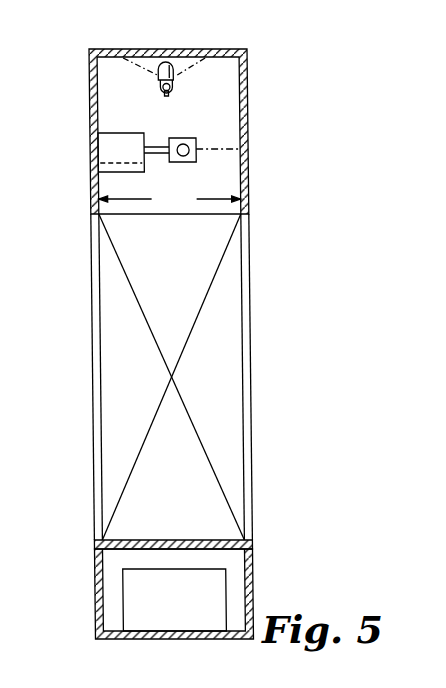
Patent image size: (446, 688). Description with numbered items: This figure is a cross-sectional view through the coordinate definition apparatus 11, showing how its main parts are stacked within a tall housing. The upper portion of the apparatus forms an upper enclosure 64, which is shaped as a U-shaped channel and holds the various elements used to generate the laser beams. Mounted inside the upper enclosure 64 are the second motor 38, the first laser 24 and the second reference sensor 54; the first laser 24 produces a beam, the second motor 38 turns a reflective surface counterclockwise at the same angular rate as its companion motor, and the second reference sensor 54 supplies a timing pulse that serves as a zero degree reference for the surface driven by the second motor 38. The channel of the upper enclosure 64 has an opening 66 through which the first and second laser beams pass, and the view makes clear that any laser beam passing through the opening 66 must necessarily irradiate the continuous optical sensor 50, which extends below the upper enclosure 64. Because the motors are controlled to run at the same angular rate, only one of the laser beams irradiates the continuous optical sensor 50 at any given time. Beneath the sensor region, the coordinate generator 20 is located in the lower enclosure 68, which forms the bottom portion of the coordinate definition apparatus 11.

The coordinate definition apparatus 11 is at (298, 166).
The coordinate generator 20 is at (126, 592).
The first laser 24 is at (176, 52).
The second motor 38 is at (118, 133).
The continuous optical sensor 50 is at (226, 298).
The second reference sensor 54 is at (183, 139).
The upper enclosure 64 is at (222, 85).
The opening 66 is at (170, 200).
The lower enclosure 68 is at (113, 558).